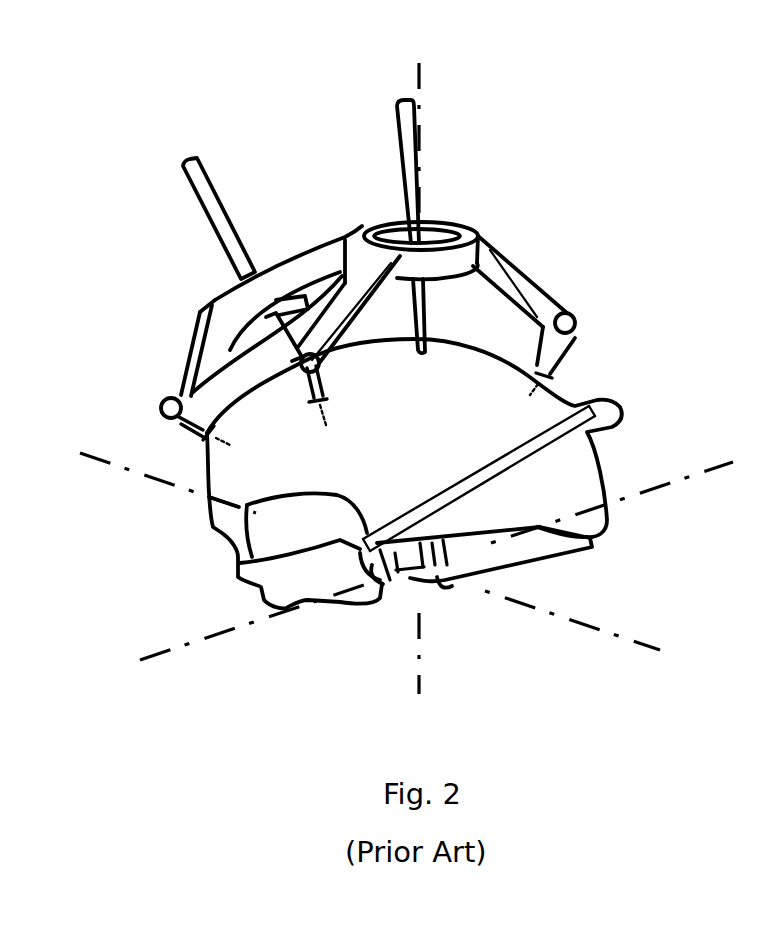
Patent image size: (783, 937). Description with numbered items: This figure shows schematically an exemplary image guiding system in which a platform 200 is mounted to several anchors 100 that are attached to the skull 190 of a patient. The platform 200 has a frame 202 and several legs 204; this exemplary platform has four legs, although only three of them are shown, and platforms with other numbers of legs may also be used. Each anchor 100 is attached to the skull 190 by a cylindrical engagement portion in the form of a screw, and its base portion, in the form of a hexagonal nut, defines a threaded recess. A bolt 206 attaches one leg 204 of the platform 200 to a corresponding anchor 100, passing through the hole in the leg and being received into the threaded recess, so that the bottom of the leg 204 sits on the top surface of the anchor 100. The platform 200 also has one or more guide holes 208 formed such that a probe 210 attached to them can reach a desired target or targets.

The platform 200 is at (637, 30).
The frame 202 is at (212, 300).
The legs 204 is at (350, 252).
The bolt 206 is at (160, 413).
The guide holes 208 is at (298, 302).
The probe 210 is at (426, 546).
The anchor 100 is at (207, 445).
The skull 190 is at (600, 456).